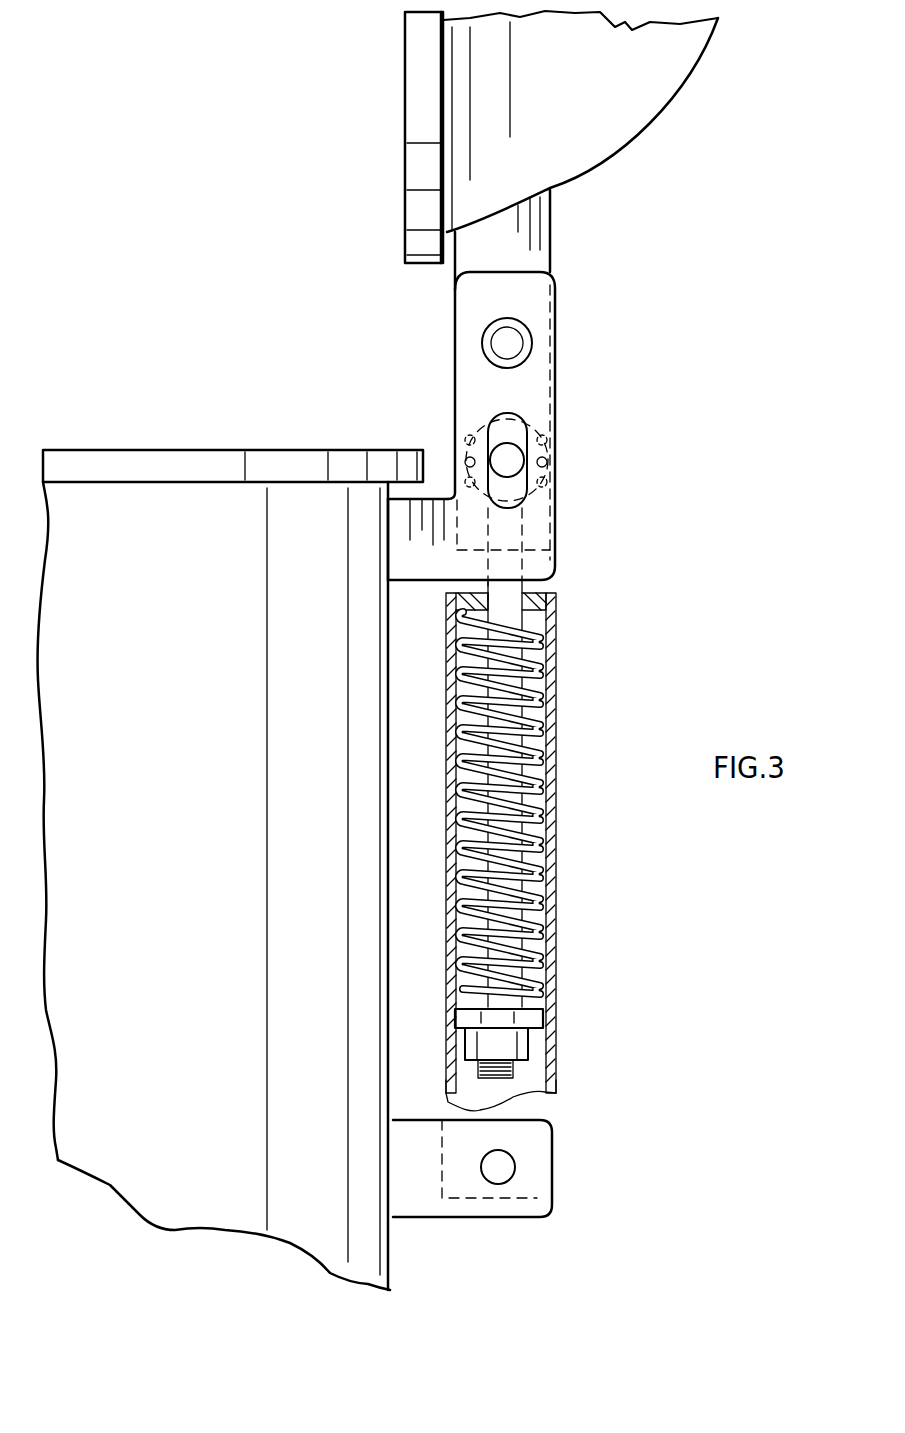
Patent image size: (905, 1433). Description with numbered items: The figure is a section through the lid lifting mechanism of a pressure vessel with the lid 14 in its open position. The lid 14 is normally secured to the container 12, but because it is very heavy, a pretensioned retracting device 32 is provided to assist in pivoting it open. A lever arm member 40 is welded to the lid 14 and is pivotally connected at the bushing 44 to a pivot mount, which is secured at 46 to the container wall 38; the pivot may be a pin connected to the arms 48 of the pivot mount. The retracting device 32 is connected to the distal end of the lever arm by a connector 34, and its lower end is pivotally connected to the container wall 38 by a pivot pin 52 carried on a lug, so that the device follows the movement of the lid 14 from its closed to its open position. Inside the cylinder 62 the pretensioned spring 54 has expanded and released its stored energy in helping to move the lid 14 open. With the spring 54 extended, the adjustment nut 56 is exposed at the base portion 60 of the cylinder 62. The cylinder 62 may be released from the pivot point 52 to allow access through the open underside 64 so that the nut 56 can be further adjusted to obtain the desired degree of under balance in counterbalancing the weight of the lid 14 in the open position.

The container 12 is at (216, 508).
The lid 14 is at (643, 100).
The pretensioned retracting device 32 is at (558, 745).
The connector 34 is at (551, 452).
The container wall 38 is at (322, 1080).
The arm member 40 is at (542, 228).
The bushing 44 is at (507, 343).
The securing point 46 is at (390, 584).
The arms of the pivot mount 48 is at (405, 552).
The pivot pin 52 is at (507, 1168).
The pretensioned spring 54 is at (548, 663).
The adjustment nut 56 is at (512, 1043).
The base portion 60 is at (555, 1098).
The cylinder 62 is at (558, 846).
The open underside 64 is at (528, 1203).